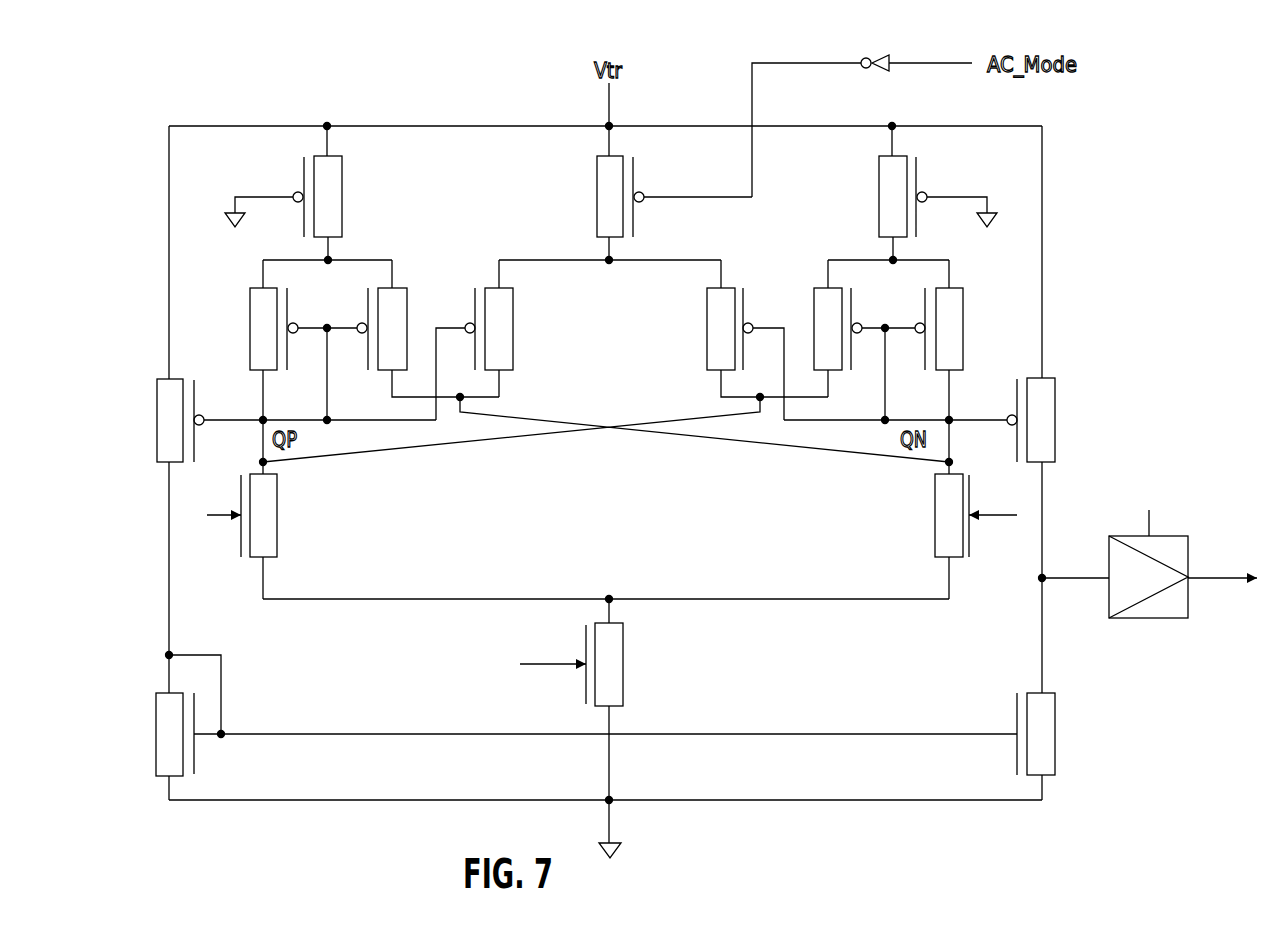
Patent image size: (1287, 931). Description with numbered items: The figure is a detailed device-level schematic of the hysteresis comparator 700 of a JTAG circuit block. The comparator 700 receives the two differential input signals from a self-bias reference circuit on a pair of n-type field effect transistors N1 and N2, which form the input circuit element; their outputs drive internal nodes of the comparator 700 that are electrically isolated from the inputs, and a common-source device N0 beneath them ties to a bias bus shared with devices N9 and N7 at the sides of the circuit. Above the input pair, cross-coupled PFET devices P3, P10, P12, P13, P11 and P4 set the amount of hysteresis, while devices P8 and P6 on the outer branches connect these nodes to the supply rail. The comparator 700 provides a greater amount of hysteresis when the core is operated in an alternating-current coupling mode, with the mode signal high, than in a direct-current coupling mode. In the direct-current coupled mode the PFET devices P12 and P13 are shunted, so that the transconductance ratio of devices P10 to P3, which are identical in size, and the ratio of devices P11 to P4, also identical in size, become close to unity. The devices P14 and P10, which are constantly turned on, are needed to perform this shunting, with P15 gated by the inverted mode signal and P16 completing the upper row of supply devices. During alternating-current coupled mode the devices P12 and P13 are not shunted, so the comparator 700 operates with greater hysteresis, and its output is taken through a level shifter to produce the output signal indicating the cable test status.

The hysteresis comparator 700 is at (1132, 168).
The PFET device P3 is at (257, 318).
The PFET device P4 is at (957, 305).
The PFET device P6 is at (1050, 395).
The PFET device P8 is at (160, 417).
The PFET device P10 is at (398, 314).
The PFET device P11 is at (822, 305).
The PFET device P12 is at (505, 318).
The PFET device P13 is at (715, 318).
The PFET device P14 is at (342, 199).
The PFET device P15 is at (597, 199).
The PFET device P16 is at (879, 199).
The NFET device N0 is at (617, 640).
The NFET input device N1 is at (270, 520).
The NFET input device N2 is at (940, 495).
The NFET device N7 is at (1050, 708).
The NFET device N9 is at (162, 702).